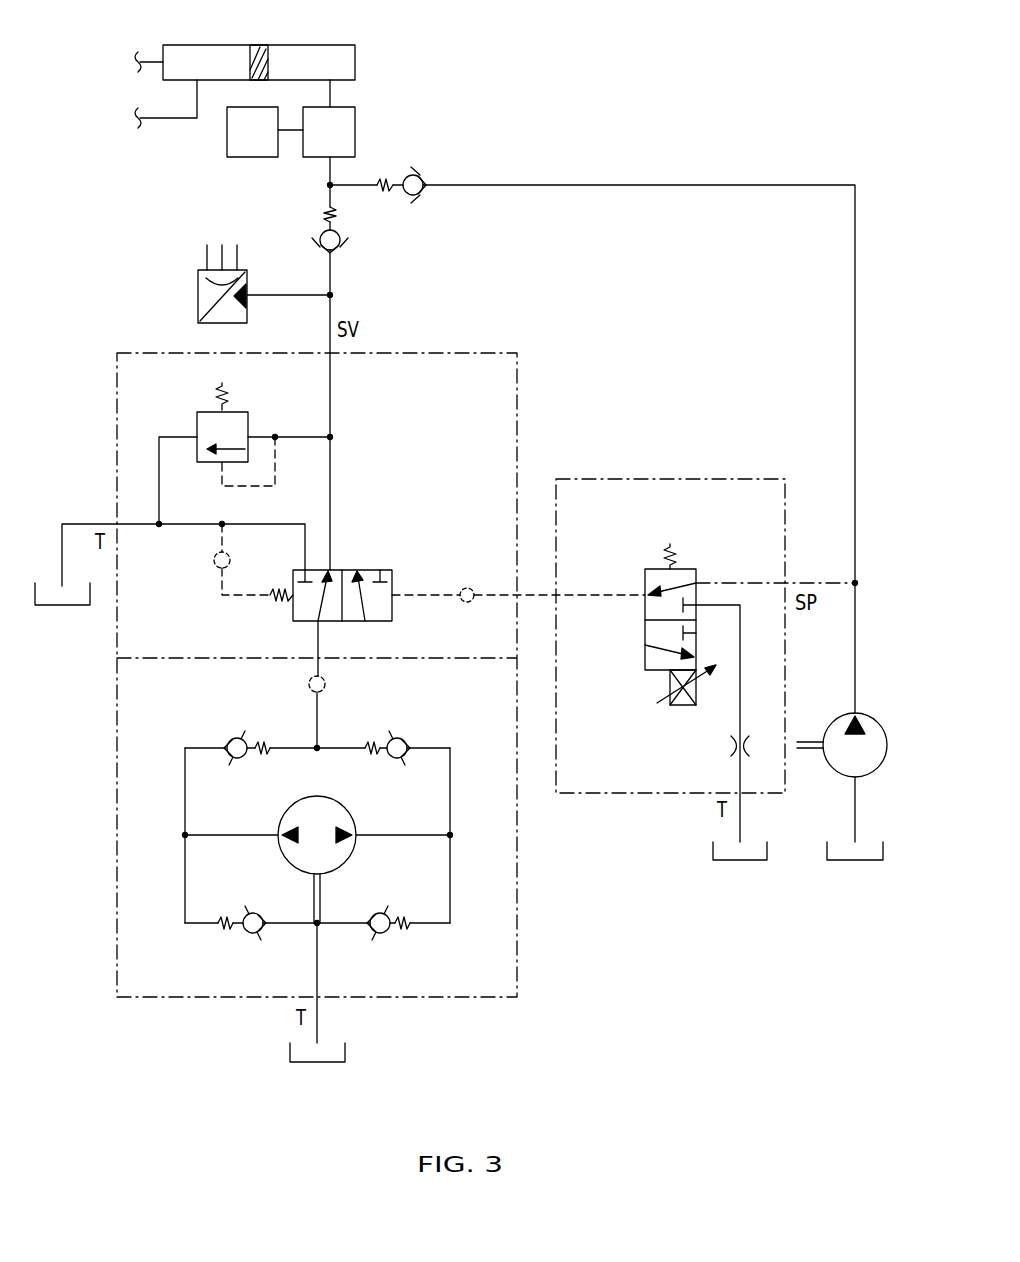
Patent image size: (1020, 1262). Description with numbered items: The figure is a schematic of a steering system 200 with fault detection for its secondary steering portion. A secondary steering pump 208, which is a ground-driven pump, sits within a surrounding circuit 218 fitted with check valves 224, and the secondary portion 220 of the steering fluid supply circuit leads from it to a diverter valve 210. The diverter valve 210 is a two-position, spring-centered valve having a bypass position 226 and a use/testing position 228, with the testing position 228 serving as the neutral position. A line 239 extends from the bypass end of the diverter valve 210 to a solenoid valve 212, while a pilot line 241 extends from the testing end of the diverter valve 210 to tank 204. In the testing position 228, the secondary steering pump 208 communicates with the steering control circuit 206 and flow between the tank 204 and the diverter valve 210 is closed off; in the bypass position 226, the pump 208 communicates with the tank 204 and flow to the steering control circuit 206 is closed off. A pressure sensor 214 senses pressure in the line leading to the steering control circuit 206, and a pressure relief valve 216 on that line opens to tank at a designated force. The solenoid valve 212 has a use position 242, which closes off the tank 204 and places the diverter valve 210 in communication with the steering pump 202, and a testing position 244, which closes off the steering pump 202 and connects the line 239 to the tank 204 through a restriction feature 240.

The steering system 200 is at (795, 46).
The steering pump 202 is at (866, 778).
The tank 204 is at (62, 607).
The steering control circuit 206 is at (356, 135).
The secondary steering pump 208 is at (423, 885).
The diverter valve 210 is at (343, 588).
The solenoid valve 212 is at (675, 615).
The pressure sensor 214 is at (197, 301).
The pressure relief valve 216 is at (197, 428).
The surrounding circuit 218 is at (345, 746).
The secondary portion 220 is at (308, 686).
The check valves 224 is at (228, 738).
The bypass position 226 is at (385, 626).
The use/testing position 228 is at (305, 630).
The line 239 is at (467, 587).
The restriction feature 240 is at (731, 746).
The pilot line 241 is at (213, 563).
The use position 242 is at (645, 585).
The testing position 244 is at (645, 637).